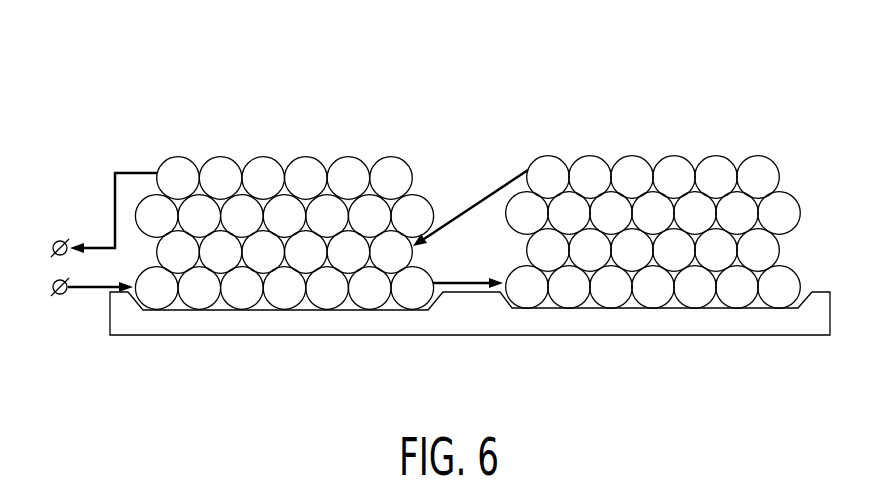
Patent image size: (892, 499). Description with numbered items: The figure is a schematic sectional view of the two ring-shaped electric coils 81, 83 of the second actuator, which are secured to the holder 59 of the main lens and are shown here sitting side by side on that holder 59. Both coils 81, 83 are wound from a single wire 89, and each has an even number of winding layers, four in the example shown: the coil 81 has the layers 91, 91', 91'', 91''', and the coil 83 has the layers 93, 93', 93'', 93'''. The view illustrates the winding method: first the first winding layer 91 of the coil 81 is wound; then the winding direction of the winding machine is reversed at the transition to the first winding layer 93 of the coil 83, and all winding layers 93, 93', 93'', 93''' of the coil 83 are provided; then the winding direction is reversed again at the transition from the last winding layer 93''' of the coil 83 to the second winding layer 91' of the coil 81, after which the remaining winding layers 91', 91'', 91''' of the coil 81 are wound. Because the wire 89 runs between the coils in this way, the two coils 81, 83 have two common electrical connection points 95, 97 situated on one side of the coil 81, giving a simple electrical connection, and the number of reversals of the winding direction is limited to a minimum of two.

The holder 59 is at (723, 322).
The electric coil 81 is at (284, 211).
The electric coil 83 is at (653, 210).
The wire 89 is at (133, 172).
The first winding layer 91 is at (284, 330).
The second winding layer 91' is at (263, 312).
The winding layer 91'' is at (288, 172).
The winding layer 91''' is at (263, 140).
The first winding layer 93 is at (653, 329).
The winding layer 93' is at (632, 311).
The winding layer 93'' is at (656, 170).
The last winding layer 93''' is at (632, 138).
The electrical connection point 95 is at (60, 296).
The electrical connection point 97 is at (61, 240).